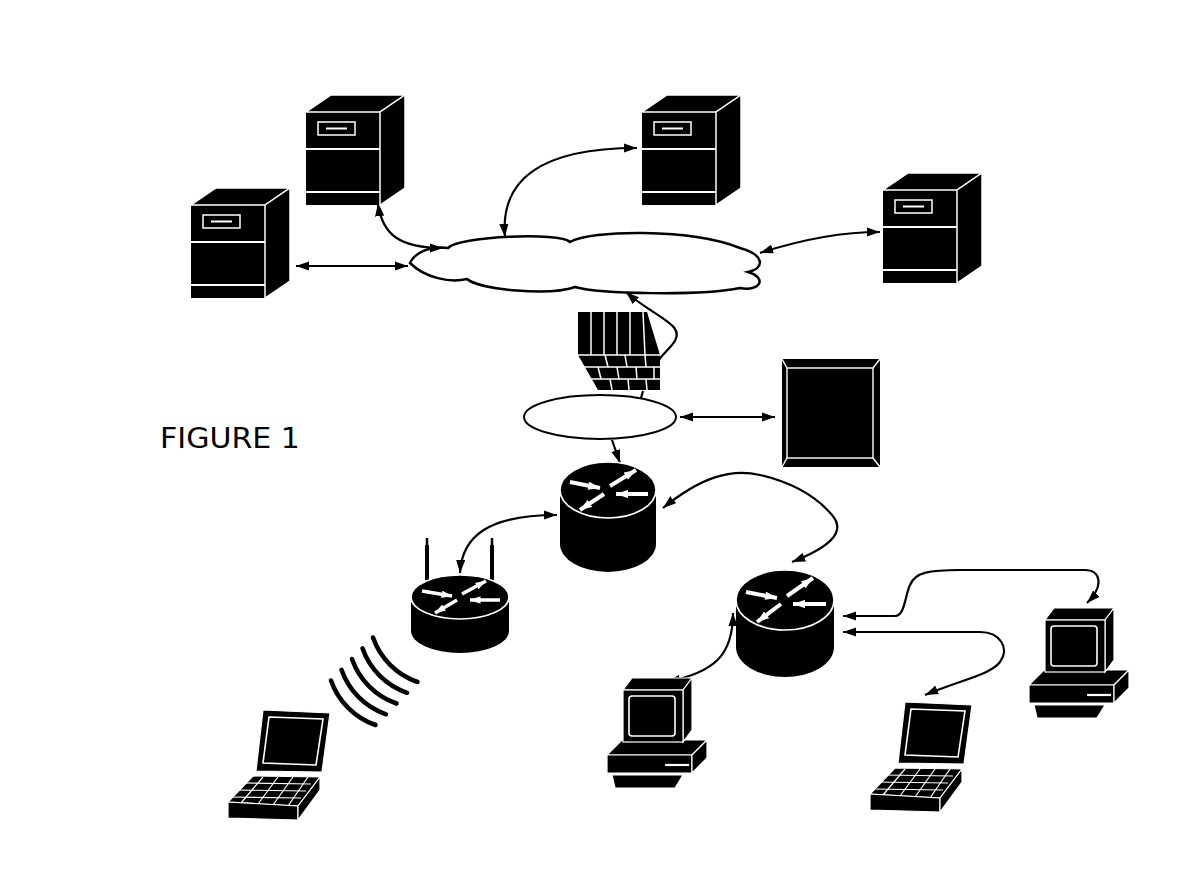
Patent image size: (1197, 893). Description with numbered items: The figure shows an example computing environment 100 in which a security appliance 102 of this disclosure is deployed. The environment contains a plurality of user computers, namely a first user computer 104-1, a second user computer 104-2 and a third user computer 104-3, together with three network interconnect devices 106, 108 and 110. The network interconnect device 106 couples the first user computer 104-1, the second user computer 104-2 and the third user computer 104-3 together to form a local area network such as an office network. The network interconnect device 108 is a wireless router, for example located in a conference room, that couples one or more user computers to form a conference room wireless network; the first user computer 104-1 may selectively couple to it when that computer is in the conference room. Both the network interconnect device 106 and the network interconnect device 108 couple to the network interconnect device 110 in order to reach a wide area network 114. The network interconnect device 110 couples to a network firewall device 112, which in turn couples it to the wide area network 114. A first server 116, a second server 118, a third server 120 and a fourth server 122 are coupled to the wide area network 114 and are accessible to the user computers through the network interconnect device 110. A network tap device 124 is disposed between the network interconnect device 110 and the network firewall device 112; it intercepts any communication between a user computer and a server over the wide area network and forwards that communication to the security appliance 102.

The computing environment 100 is at (848, 132).
The security appliance 102 is at (868, 368).
The first user computer 104-1 is at (320, 777).
The second user computer 104-2 is at (610, 752).
The third user computer 104-3 is at (1110, 622).
The network interconnect device 106 is at (825, 575).
The network interconnect device 108 is at (510, 606).
The network interconnect device 110 is at (655, 478).
The network firewall device 112 is at (661, 366).
The wide area network 114 is at (730, 256).
The first server 116 is at (980, 188).
The second server 118 is at (192, 257).
The third server 120 is at (403, 112).
The fourth server 122 is at (737, 124).
The network tap device 124 is at (655, 416).